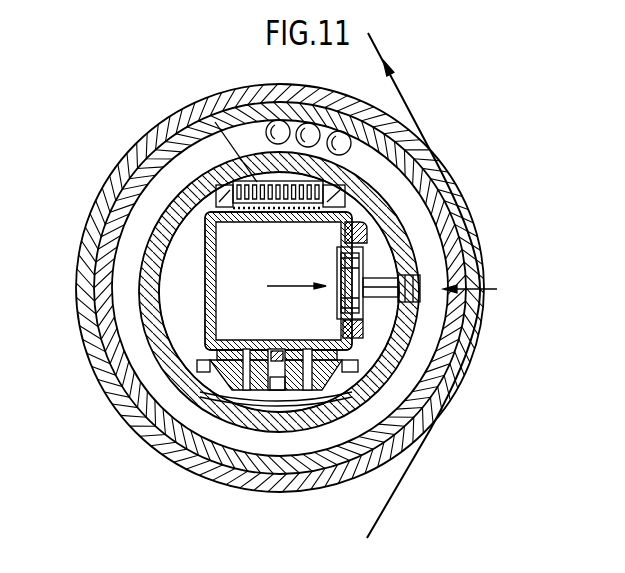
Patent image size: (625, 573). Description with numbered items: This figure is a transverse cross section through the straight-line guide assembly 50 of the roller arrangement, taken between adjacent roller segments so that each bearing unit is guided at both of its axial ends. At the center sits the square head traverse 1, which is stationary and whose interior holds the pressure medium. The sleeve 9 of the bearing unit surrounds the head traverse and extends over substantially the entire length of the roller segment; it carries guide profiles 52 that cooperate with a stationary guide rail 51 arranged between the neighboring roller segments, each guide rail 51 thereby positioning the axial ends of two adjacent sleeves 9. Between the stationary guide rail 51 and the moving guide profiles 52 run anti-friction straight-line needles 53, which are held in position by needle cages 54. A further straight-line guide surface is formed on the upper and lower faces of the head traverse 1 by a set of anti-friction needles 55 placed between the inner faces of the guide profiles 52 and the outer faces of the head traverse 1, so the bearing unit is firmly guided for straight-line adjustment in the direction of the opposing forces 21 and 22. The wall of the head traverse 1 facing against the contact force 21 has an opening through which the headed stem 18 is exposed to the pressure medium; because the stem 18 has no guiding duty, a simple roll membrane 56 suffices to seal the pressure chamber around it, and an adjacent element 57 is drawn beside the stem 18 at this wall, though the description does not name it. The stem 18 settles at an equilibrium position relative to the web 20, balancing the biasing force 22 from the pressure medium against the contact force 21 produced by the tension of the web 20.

The head traverse 1 is at (213, 327).
The sleeve 9 is at (392, 212).
The stem 18 is at (380, 282).
The web 20 is at (396, 77).
The contact force 21 is at (478, 298).
The biasing force 22 is at (296, 299).
The straight-line guide 50 is at (378, 180).
The guide rail 51 is at (206, 371).
The guide profile 52 is at (186, 199).
The needle 53 is at (200, 112).
The needle cage 54 is at (325, 177).
The needle 55 is at (214, 234).
The roll membrane 56 is at (340, 328).
The cylinder 57 is at (338, 268).